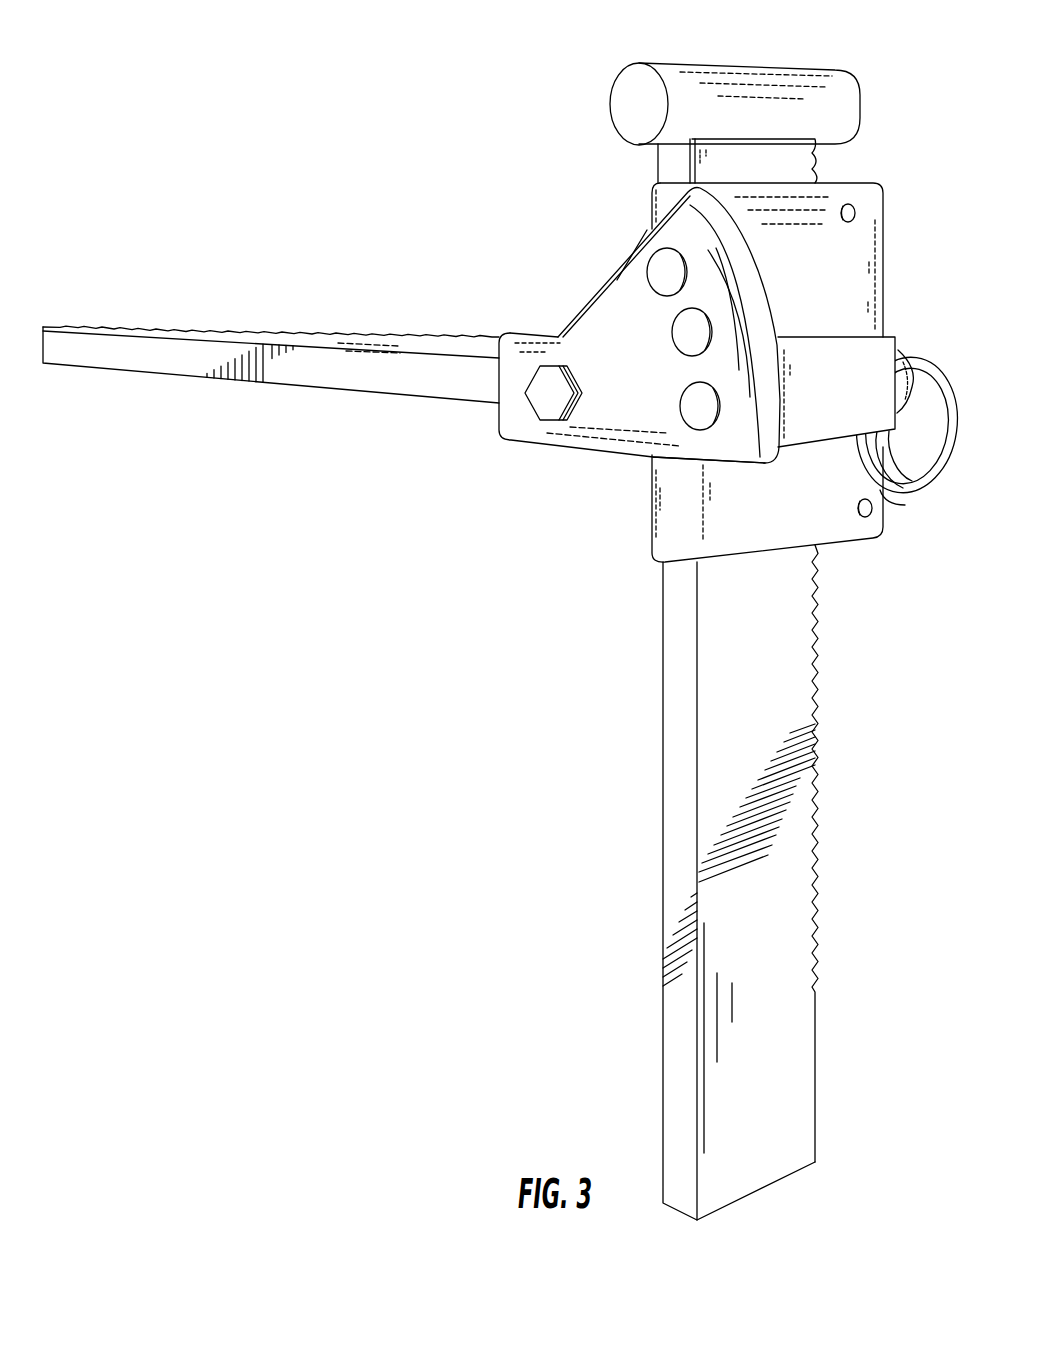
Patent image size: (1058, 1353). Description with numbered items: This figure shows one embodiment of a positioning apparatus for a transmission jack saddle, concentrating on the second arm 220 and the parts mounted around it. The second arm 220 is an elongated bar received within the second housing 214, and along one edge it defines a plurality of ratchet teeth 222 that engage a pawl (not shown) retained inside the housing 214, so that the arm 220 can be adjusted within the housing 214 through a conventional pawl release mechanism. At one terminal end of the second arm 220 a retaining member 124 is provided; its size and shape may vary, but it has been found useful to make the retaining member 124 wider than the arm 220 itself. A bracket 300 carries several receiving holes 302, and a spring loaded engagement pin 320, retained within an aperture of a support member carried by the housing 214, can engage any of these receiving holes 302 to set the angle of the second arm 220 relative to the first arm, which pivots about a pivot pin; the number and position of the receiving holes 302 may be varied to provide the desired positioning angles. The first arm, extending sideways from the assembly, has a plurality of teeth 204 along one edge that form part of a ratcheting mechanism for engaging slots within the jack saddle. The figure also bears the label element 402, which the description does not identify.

The retaining member 124 is at (682, 89).
The second housing 214 is at (840, 254).
The bracket 300 is at (620, 287).
The receiving holes 302 is at (672, 412).
The spring loaded engagement pin 320 is at (913, 363).
The teeth 204 is at (352, 338).
The arm face 402 is at (322, 374).
The ratchet teeth 222 is at (816, 918).
The second arm 220 is at (665, 1088).